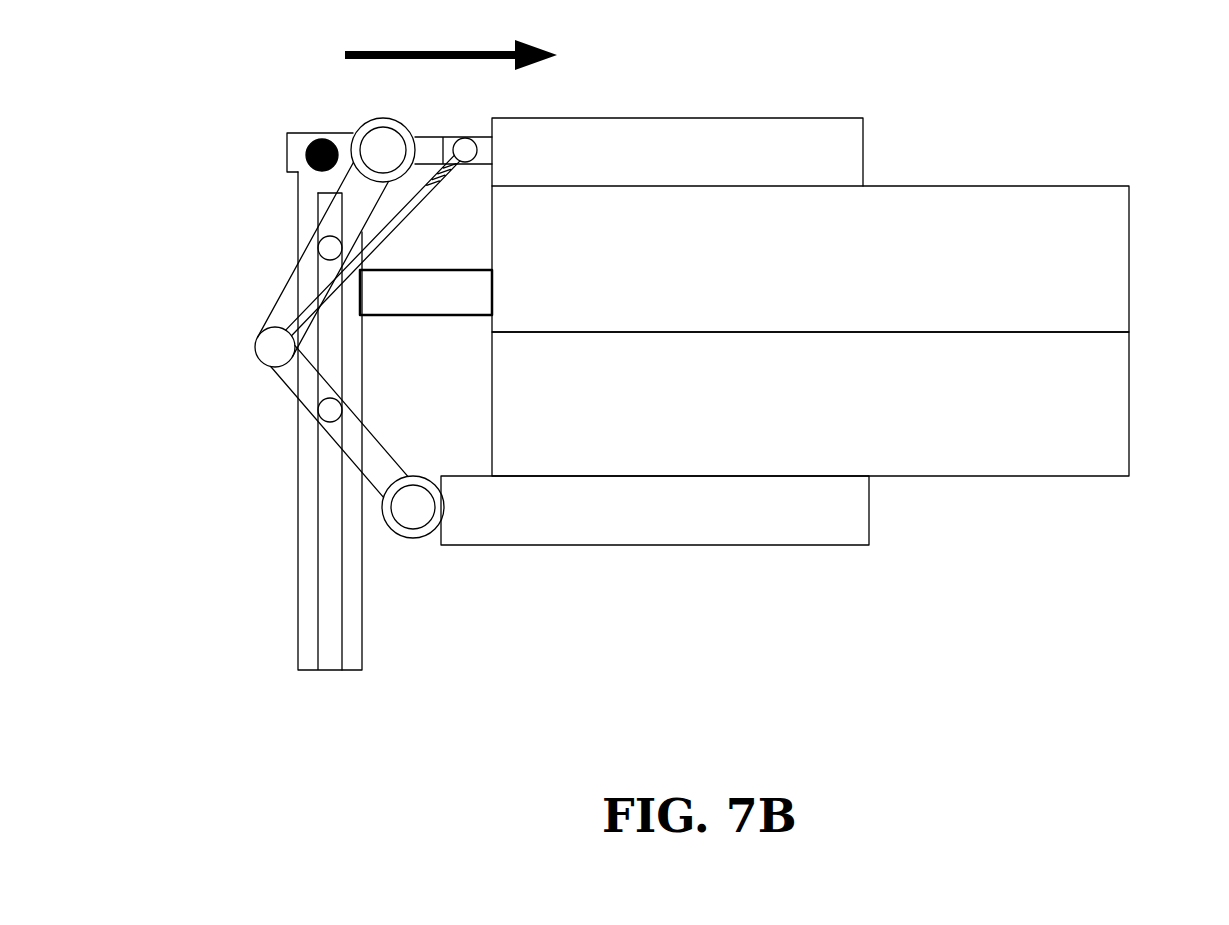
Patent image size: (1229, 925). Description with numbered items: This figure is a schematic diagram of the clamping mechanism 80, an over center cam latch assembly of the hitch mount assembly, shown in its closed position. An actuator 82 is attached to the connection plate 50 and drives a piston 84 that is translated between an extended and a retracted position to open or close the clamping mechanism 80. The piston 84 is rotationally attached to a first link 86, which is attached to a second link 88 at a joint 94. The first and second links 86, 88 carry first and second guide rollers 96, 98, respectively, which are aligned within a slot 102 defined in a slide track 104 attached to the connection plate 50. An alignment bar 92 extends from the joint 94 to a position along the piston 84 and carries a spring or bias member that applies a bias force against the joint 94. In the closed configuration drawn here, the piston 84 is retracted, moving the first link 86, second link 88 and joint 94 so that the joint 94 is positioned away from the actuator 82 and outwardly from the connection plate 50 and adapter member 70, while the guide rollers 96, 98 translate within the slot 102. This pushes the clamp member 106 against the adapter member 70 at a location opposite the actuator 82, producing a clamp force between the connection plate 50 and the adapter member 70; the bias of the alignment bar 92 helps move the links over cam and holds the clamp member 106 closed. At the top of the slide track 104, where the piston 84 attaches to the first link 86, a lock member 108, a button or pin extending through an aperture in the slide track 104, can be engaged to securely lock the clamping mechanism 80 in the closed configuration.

The connection plate 50 is at (1050, 227).
The adapter member 70 is at (1073, 423).
The clamping mechanism 80 is at (215, 202).
The actuator 82 is at (795, 132).
The piston 84 is at (423, 138).
The first link 86 is at (300, 288).
The second link 88 is at (303, 395).
The alignment bar 92 is at (387, 235).
The joint 94 is at (263, 343).
The first guide roller 96 is at (320, 252).
The second guide roller 98 is at (322, 418).
The slot 102 is at (327, 552).
The slide track 104 is at (303, 612).
The clamp member 106 is at (580, 512).
The lock member 108 is at (310, 149).